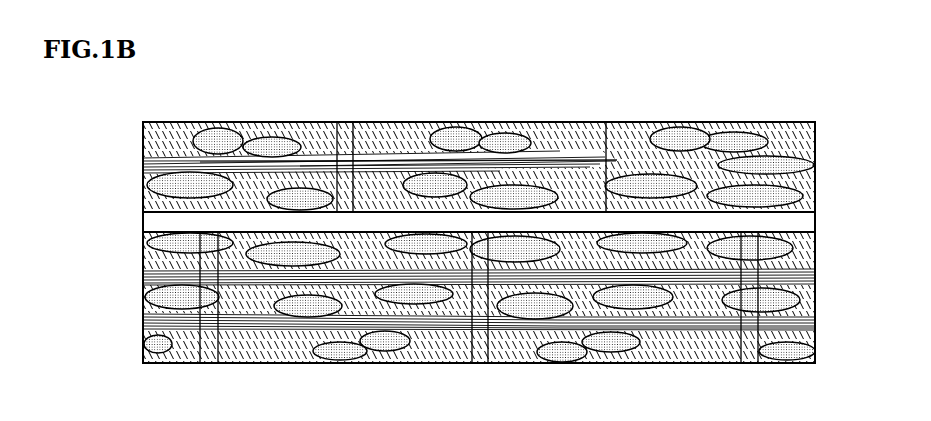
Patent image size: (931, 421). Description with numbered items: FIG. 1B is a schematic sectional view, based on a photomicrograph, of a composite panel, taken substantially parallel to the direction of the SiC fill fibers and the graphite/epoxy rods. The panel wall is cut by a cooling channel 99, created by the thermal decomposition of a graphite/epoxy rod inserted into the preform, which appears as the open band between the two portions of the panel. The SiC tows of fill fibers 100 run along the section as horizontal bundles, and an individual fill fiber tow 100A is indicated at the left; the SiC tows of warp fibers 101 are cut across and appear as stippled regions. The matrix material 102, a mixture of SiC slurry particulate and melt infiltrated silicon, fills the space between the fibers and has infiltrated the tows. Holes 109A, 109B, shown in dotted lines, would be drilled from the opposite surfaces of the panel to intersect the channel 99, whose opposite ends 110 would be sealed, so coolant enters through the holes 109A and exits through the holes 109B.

The cooling channel 99 is at (470, 228).
The SiC tows of fill fibers 100 is at (181, 167).
The fiber strand 100A is at (143, 190).
The SiC tows of warp fibers 101 is at (636, 187).
The matrix material 102 is at (571, 137).
The holes 109A is at (365, 158).
The holes 109B is at (465, 347).
The opposite ends 110 is at (815, 225).